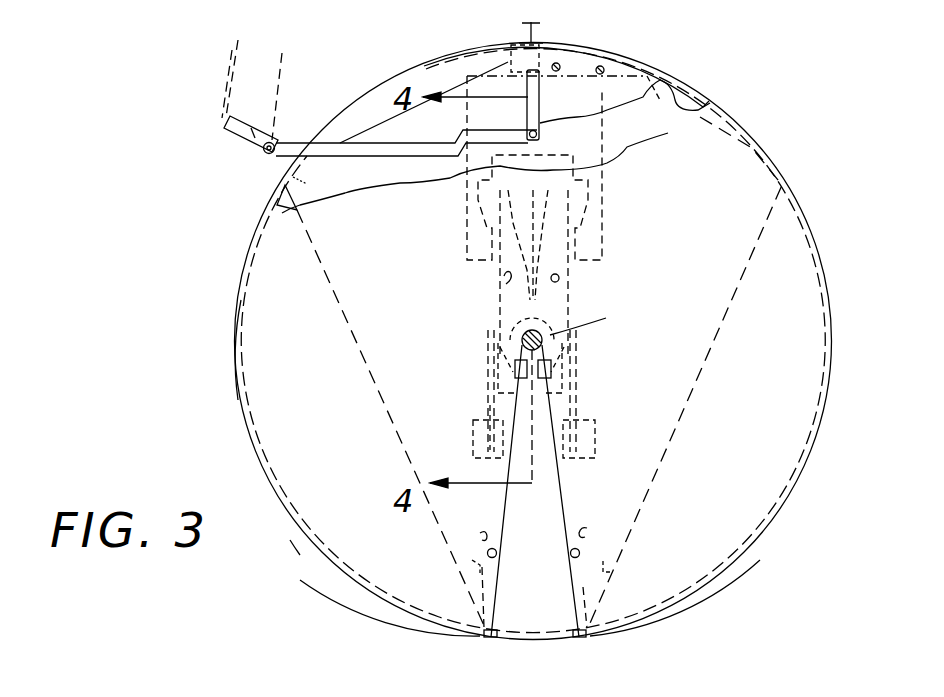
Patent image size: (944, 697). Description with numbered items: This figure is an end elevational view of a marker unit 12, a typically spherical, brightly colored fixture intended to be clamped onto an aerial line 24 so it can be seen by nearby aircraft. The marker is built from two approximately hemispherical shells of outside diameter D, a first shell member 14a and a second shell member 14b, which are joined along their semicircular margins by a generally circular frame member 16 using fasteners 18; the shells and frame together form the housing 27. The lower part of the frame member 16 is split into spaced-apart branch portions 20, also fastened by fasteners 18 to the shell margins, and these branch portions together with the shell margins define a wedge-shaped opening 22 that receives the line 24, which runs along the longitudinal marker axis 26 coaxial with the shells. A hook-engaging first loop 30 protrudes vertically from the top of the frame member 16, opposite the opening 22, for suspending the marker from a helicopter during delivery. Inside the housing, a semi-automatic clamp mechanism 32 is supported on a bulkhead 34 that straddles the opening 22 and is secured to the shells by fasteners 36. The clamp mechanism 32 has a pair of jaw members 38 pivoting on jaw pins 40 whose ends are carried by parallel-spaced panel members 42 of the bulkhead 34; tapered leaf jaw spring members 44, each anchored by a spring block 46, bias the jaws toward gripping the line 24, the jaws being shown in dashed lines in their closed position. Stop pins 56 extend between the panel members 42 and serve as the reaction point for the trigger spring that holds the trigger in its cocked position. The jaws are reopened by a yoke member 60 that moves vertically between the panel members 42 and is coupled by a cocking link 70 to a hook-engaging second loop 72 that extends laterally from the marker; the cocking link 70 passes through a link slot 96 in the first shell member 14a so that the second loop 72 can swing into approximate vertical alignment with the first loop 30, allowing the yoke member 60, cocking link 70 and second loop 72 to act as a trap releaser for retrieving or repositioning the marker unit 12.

The marker unit 12 is at (223, 457).
The first shell member 14a is at (375, 616).
The second shell member 14b is at (672, 607).
The frame member 16 is at (583, 42).
The fasteners 18 is at (489, 552).
The branch portions 20 is at (472, 562).
The wedge-shaped opening 22 is at (548, 529).
The line 24 is at (514, 335).
The longitudinal marker axis 26 is at (606, 318).
The housing 27 is at (243, 415).
The first loop 30 is at (537, 35).
The clamp mechanism 32 is at (485, 369).
The bulkhead 34 is at (688, 108).
The fasteners 36 is at (290, 174).
The jaw members 38 is at (570, 280).
The jaw pins 40 is at (500, 285).
The panel members 42 is at (662, 398).
The jaw spring members 44 is at (488, 410).
The spring block 46 is at (472, 456).
The stop pins 56 is at (593, 120).
The yoke member 60 is at (603, 93).
The cocking link 70 is at (393, 157).
The second loop 72 is at (240, 133).
The link slots 96 is at (302, 159).
The outside diameter D is at (308, 545).